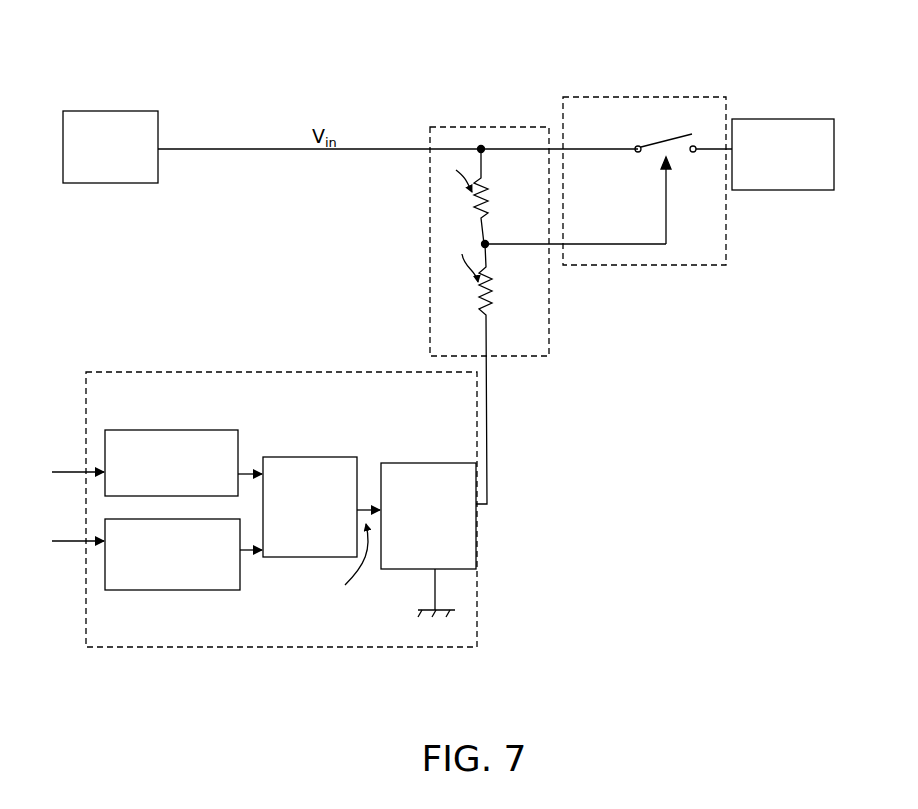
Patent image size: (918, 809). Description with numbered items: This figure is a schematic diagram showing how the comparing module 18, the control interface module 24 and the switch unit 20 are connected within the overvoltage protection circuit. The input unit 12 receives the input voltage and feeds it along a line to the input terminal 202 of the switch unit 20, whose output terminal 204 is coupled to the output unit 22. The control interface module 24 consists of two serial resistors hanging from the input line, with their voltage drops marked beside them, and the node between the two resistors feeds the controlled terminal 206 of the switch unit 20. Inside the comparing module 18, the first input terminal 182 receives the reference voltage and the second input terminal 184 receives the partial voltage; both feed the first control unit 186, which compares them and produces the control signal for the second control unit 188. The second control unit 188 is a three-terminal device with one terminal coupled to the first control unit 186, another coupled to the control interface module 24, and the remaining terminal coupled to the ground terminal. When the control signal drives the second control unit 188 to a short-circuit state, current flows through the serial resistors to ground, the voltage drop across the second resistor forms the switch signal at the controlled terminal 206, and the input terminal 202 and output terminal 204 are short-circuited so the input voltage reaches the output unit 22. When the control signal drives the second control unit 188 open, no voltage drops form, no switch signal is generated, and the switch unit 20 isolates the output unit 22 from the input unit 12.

The input unit 12 is at (112, 109).
The comparing module 18 is at (260, 487).
The switch unit 20 is at (608, 151).
The output unit 22 is at (764, 118).
The control interface module 24 is at (478, 126).
The first input terminal 182 is at (206, 431).
The second input terminal 184 is at (190, 591).
The first control unit 186 is at (298, 457).
The second control unit 188 is at (406, 463).
The input terminal 202 is at (631, 155).
The output terminal 204 is at (697, 160).
The controlled terminal 206 is at (654, 166).